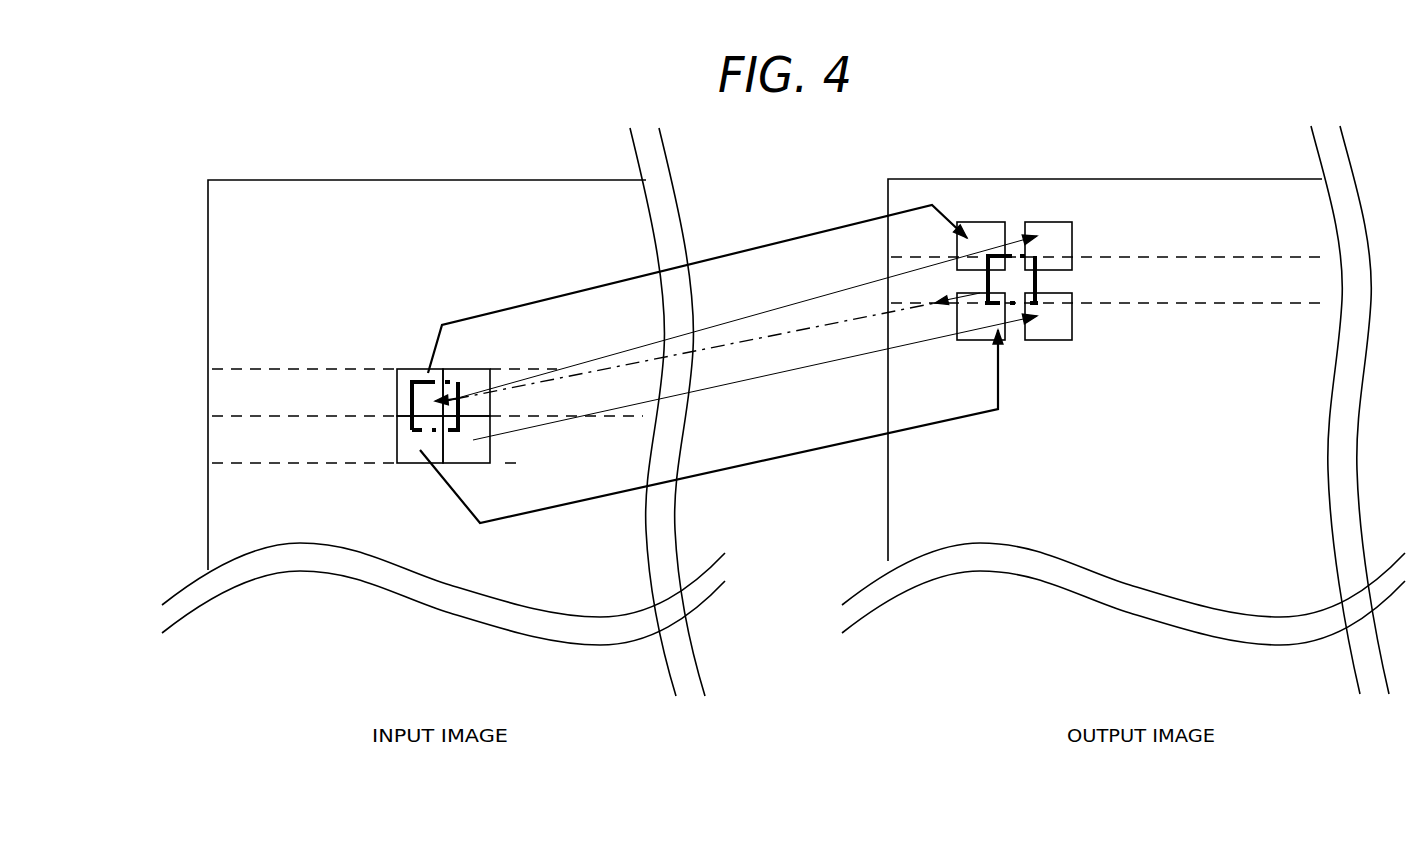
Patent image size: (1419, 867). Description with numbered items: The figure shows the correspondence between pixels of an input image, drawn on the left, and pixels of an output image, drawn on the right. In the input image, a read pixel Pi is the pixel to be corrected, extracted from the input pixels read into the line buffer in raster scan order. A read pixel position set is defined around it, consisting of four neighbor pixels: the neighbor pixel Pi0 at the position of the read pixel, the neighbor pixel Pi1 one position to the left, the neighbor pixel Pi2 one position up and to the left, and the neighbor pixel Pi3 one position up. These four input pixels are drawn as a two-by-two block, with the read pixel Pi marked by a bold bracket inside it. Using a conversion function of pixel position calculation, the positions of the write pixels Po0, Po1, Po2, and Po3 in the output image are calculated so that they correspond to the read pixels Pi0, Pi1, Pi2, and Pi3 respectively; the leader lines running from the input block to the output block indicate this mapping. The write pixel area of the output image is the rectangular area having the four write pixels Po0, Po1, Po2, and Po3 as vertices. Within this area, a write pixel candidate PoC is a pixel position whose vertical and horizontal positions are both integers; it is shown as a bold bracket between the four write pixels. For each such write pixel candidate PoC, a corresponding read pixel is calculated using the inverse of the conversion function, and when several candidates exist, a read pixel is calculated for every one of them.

The read pixel Pi is at (423, 402).
The neighbor pixel Pi0 is at (470, 449).
The neighbor pixel Pi1 is at (477, 368).
The neighbor pixel Pi2 is at (422, 367).
The neighbor pixel Pi3 is at (427, 463).
The write pixel Po0 is at (1058, 332).
The write pixel Po1 is at (1058, 232).
The write pixel Po2 is at (977, 232).
The write pixel Po3 is at (980, 331).
The write pixel candidate PoC is at (990, 282).